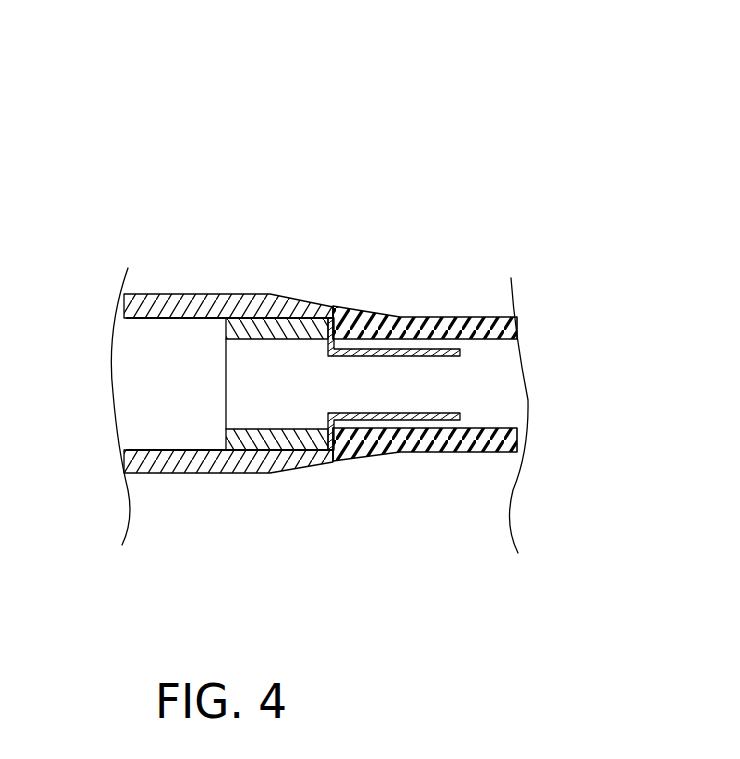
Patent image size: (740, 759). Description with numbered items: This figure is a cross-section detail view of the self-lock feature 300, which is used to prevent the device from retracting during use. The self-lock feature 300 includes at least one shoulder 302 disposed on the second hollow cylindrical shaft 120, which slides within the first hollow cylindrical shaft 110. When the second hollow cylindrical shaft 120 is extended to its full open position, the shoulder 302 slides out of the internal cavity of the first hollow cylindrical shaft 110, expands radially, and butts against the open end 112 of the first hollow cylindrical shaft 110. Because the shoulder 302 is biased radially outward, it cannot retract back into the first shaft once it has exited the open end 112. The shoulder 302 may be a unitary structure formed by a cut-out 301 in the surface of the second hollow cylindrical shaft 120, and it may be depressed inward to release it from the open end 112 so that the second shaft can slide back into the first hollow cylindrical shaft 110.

The self-lock feature 300 is at (404, 222).
The second hollow cylindrical shaft 120 is at (233, 307).
The first hollow cylindrical shaft 110 is at (277, 295).
The open end 112 is at (243, 469).
The cut-out 301 is at (432, 421).
The shoulder 302 is at (333, 463).